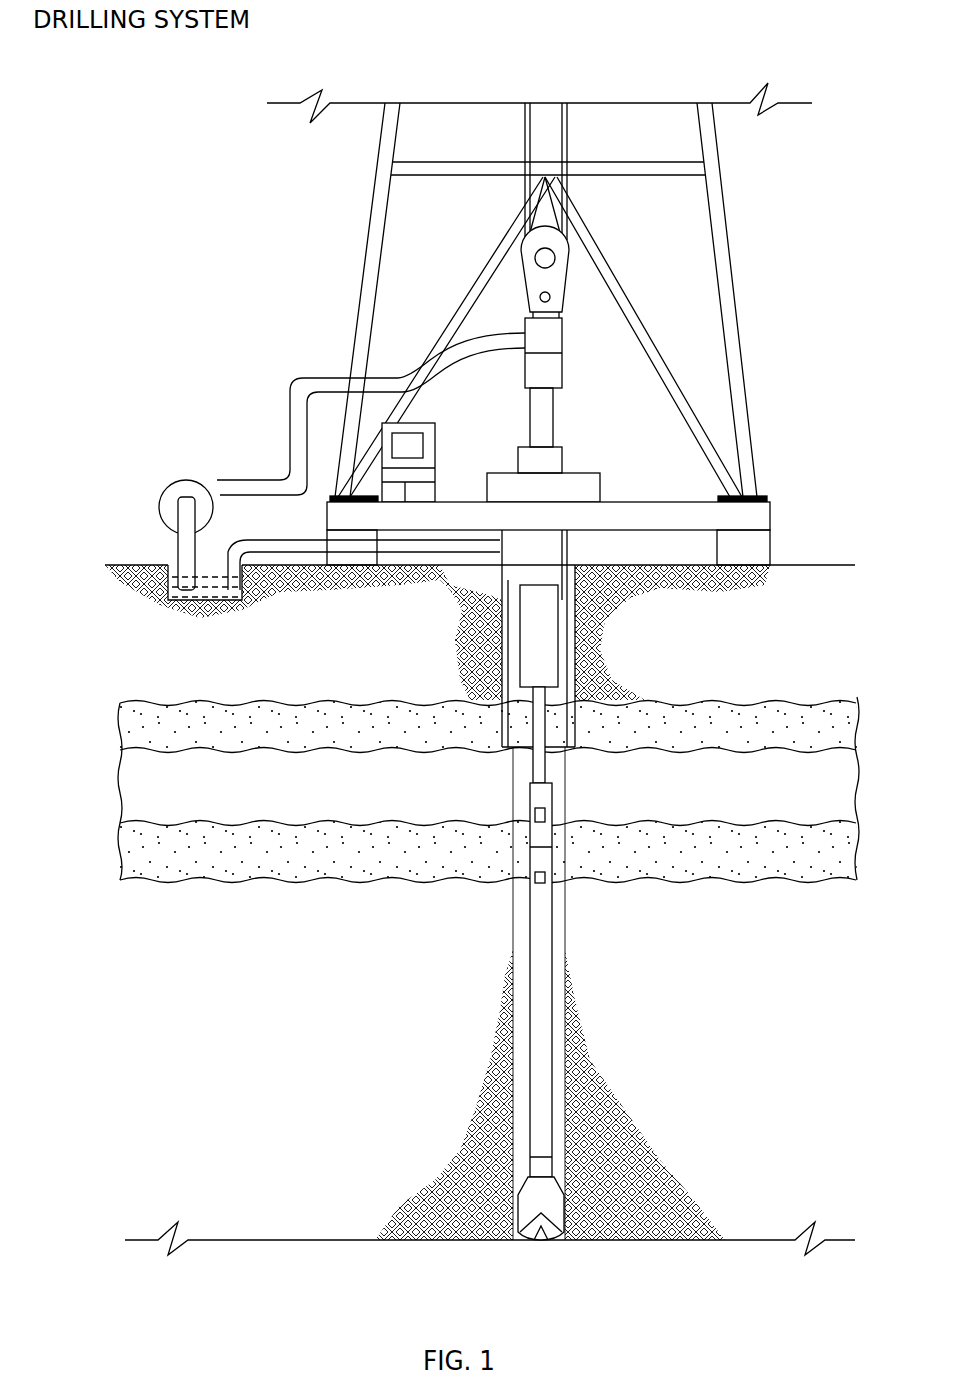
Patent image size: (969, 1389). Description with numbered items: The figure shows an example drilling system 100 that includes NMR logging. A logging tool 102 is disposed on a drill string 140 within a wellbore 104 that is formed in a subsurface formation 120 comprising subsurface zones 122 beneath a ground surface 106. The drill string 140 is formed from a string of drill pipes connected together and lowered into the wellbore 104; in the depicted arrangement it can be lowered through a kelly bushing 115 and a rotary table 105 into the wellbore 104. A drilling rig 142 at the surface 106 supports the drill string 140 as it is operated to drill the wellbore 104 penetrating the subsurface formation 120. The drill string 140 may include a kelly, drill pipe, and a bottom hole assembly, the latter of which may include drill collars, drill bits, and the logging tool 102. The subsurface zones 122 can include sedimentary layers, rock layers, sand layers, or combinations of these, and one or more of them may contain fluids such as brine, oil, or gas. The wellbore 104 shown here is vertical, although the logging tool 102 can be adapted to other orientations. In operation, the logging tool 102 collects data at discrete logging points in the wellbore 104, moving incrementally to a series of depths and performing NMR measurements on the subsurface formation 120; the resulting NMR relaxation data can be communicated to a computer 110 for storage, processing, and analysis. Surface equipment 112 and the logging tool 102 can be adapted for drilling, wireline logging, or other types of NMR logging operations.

The drilling system 100 is at (234, 76).
The logging tool 102 is at (528, 982).
The wellbore 104 is at (513, 908).
The rotary table 105 is at (595, 476).
The ground surface 106 is at (800, 562).
The computer 110 is at (430, 423).
The surface equipment 112 is at (794, 346).
The kelly bushing 115 is at (560, 447).
The subsurface formation 120 is at (459, 757).
The subsurface zones 122 is at (137, 723).
The drill string 140 is at (530, 773).
The drilling rig 142 is at (289, 280).